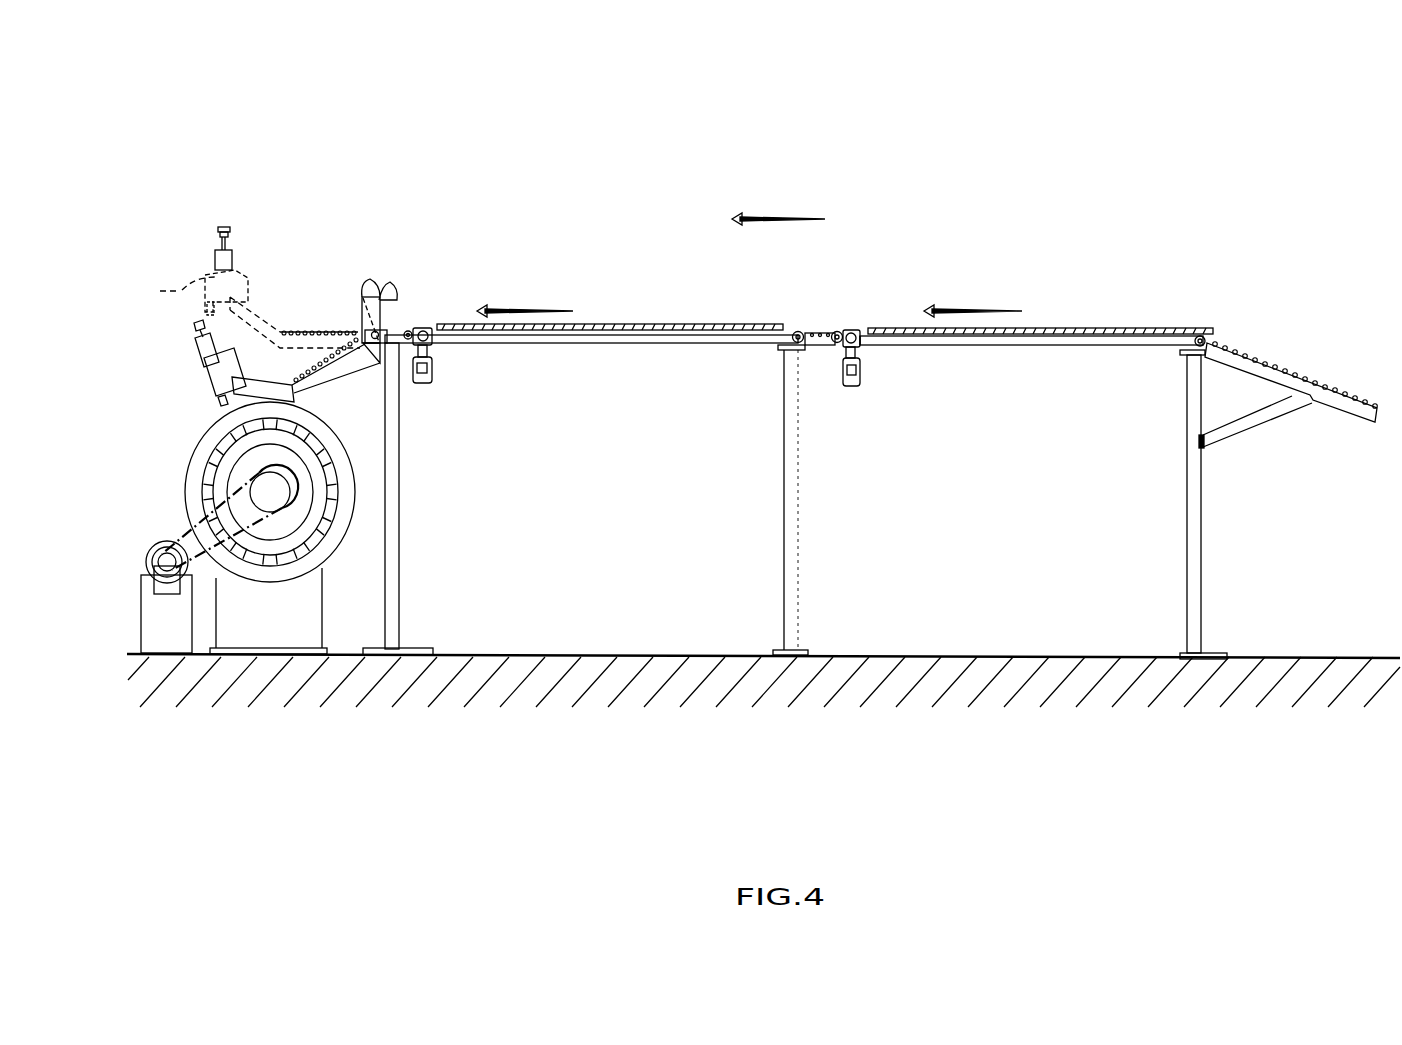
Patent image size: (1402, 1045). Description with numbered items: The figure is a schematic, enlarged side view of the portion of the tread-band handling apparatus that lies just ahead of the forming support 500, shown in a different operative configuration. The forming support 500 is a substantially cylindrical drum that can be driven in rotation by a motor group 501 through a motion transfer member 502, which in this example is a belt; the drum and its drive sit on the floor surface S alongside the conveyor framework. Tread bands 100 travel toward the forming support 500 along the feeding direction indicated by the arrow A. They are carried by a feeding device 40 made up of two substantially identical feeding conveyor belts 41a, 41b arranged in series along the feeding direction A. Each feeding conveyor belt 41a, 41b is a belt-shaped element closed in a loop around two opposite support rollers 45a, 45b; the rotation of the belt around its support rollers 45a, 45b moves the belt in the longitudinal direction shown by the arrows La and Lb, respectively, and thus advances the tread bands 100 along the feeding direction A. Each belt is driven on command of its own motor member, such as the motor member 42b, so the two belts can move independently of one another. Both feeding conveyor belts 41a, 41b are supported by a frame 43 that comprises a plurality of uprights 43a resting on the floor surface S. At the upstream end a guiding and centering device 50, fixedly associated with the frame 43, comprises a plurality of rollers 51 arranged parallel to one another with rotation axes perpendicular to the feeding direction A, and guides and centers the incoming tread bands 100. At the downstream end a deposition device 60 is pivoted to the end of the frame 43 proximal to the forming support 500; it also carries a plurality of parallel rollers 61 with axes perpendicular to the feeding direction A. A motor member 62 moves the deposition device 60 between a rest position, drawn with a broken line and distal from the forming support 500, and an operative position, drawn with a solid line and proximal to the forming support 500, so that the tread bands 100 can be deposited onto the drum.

The feeding device 40 is at (843, 147).
The feeding conveyor belt 41a is at (1052, 346).
The feeding conveyor belt 41b is at (666, 344).
The motor member 42b is at (428, 368).
The frame 43 is at (1202, 500).
The upright 43a is at (396, 492).
The support roller 45a is at (840, 331).
The support roller 45b is at (418, 328).
The guiding and centering device 50 is at (1288, 326).
The roller 51 is at (1314, 380).
The deposition device 60 is at (290, 318).
The roller 61 is at (318, 324).
The motor member 62 is at (205, 378).
The tread band 100 is at (660, 323).
The forming support 500 is at (185, 446).
The motor group 501 is at (160, 630).
The motion transfer member 502 is at (200, 568).
The floor surface S is at (1283, 657).
The feeding direction A is at (750, 215).
The longitudinal direction of belt 41a La is at (963, 309).
The longitudinal direction of belt 41b Lb is at (518, 309).